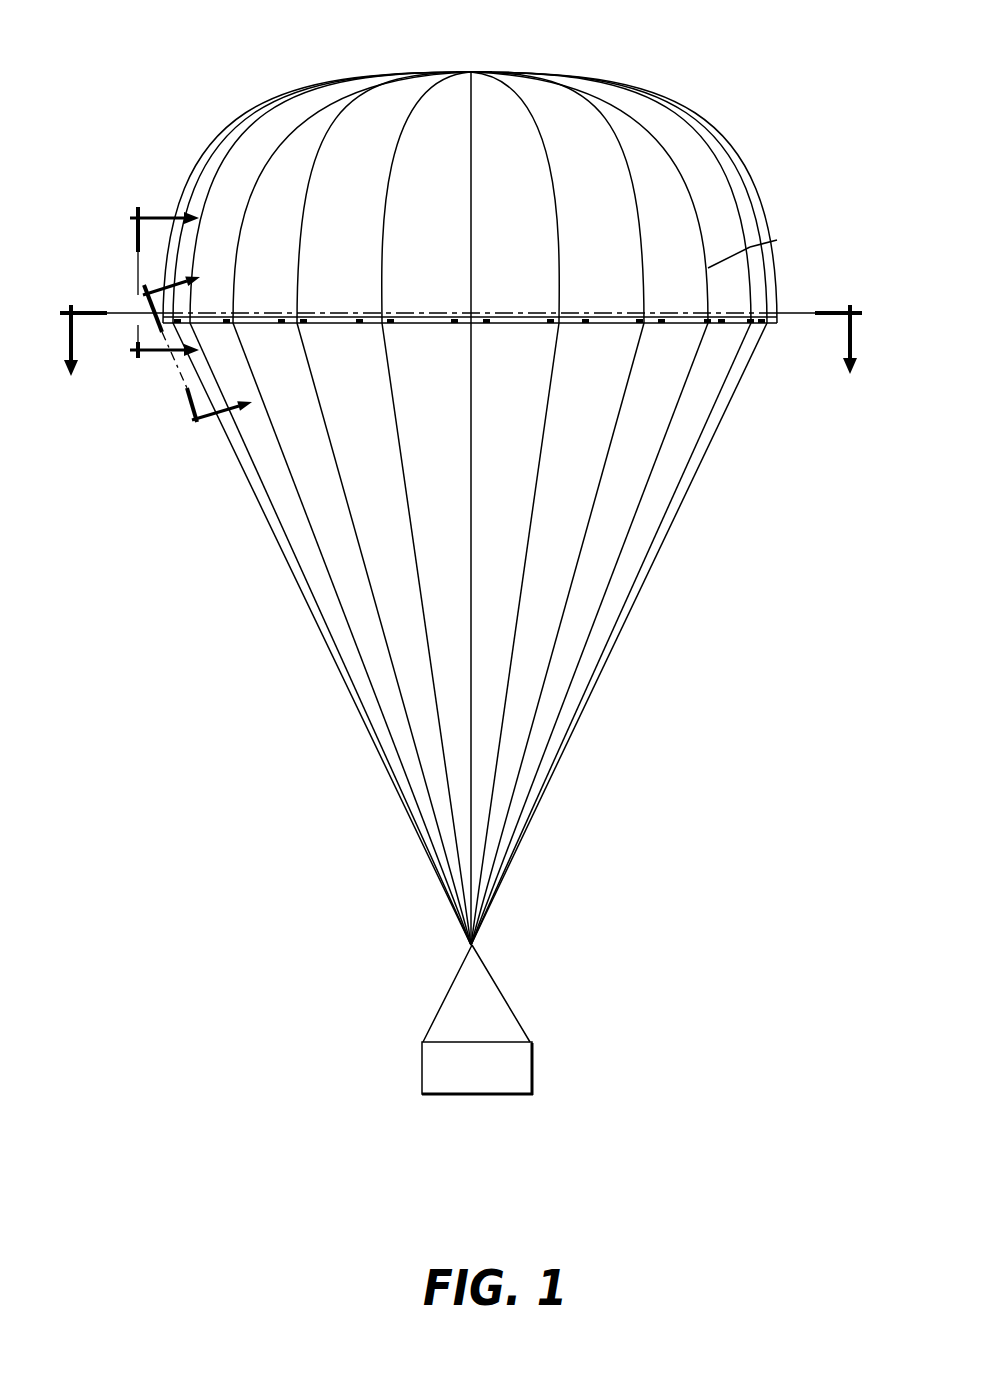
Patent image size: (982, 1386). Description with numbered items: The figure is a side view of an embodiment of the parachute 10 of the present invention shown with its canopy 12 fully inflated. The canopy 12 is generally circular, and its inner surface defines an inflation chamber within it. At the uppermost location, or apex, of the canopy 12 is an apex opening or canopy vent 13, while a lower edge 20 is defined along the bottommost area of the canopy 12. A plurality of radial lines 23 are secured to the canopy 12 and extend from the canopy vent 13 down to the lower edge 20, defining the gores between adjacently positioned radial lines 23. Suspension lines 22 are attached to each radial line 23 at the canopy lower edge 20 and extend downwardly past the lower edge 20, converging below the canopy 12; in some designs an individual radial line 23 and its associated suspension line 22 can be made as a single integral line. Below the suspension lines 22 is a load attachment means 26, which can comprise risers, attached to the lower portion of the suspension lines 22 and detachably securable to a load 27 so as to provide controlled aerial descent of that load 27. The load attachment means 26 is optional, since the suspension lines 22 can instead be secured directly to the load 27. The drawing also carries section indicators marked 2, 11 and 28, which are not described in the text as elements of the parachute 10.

The section line 2- 2 is at (211, 336).
The parachute 10 is at (187, 283).
The section line 11- 11 is at (458, 361).
The canopy 12 is at (637, 157).
The canopy vent 13 is at (490, 72).
The lower edge 20 is at (773, 320).
The suspension lines 22 is at (427, 642).
The radial lines 23 is at (712, 268).
The load attachment means 26 is at (492, 972).
The load 27 is at (493, 1082).
The suspension line attachment loops 28 is at (640, 322).